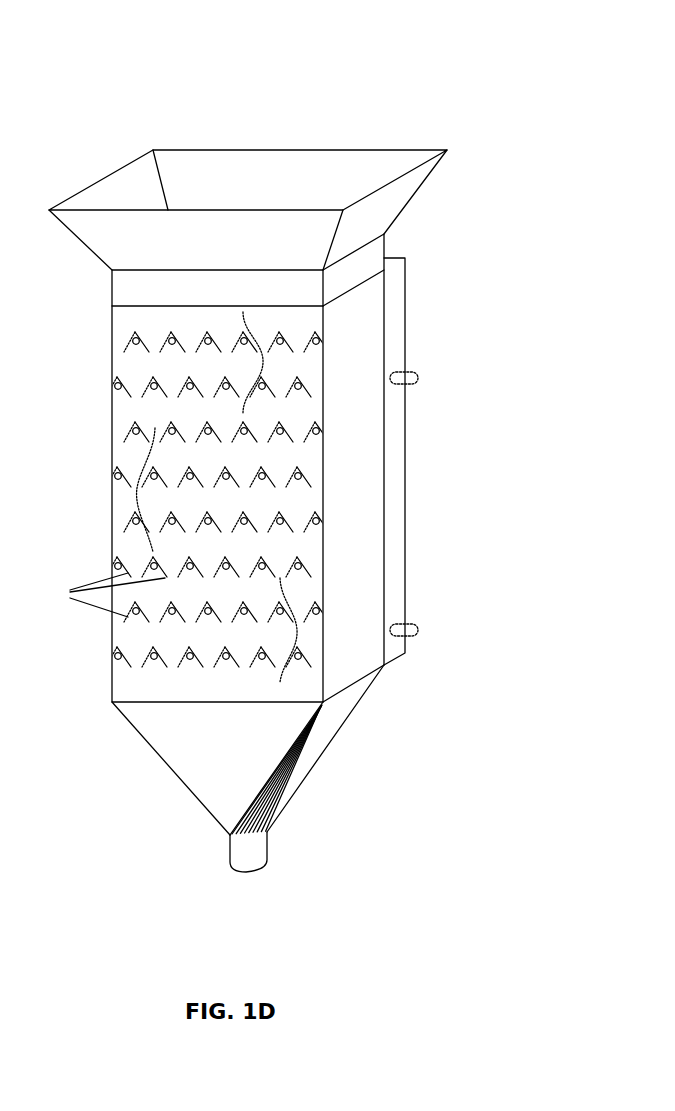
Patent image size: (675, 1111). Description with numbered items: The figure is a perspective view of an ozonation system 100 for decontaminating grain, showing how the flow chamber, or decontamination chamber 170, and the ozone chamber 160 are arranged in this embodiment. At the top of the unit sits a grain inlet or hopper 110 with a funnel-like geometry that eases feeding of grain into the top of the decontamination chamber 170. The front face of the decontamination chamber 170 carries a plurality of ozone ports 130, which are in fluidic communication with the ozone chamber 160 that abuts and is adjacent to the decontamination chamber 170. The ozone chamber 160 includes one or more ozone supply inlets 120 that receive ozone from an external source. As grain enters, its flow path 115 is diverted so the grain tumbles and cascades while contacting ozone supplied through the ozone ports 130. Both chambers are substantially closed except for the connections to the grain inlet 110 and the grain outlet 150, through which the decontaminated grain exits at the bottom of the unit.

The ozonation system 100 is at (142, 117).
The grain inlet or hopper 110 is at (397, 193).
The grain flow path 115 is at (243, 320).
The ozone supply inlet 120 is at (408, 374).
The ozone port 130 is at (152, 387).
The grain outlet 150 is at (260, 850).
The ozone chamber 160 is at (395, 475).
The decontamination chamber 170 is at (352, 523).